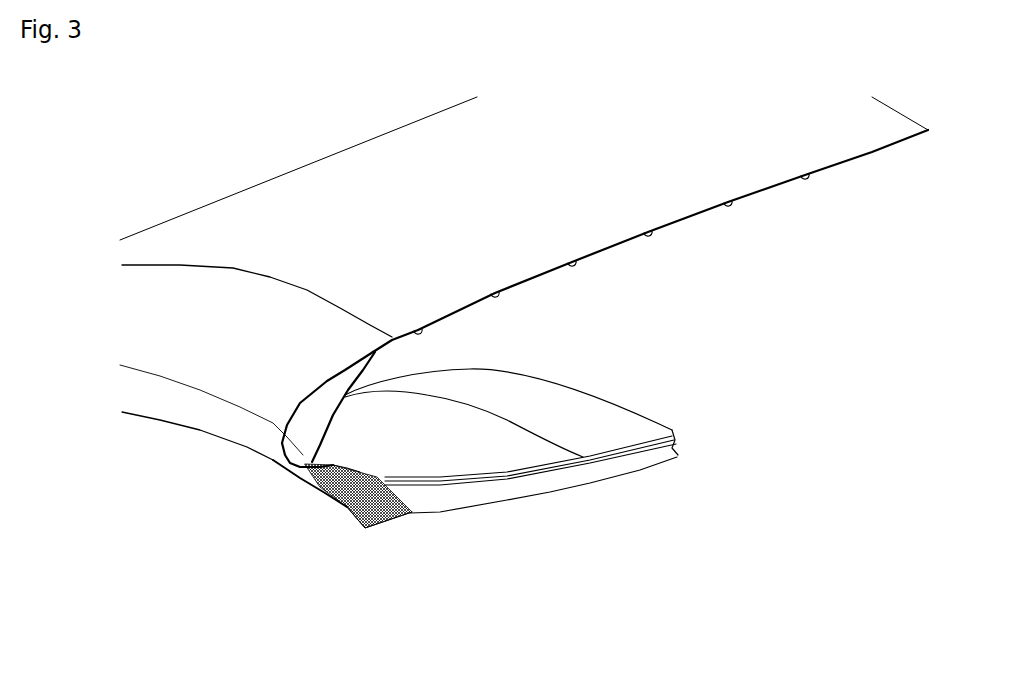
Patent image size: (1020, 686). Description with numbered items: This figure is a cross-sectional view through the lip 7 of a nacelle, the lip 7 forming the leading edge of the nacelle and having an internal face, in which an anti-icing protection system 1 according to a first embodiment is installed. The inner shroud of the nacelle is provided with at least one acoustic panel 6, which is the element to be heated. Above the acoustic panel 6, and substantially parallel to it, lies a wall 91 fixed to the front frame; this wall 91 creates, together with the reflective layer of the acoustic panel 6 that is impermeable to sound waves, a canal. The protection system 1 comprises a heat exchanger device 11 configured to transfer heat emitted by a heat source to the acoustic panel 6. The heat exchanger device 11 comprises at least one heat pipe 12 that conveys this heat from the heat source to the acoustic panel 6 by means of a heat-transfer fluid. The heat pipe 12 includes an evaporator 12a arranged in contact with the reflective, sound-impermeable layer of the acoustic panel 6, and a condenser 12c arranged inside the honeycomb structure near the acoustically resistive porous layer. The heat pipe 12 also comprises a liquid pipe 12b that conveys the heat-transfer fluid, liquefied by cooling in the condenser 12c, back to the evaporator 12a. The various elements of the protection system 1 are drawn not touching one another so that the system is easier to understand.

The protection system 1 is at (328, 560).
The acoustic panel 6 is at (642, 460).
The lip 7 is at (147, 330).
The heat exchanger device 11 is at (375, 547).
The heat pipe 12 is at (345, 515).
The evaporator 12a is at (387, 477).
The liquid pipe 12b is at (393, 525).
The condenser 12c is at (333, 502).
The wall 91 is at (503, 443).